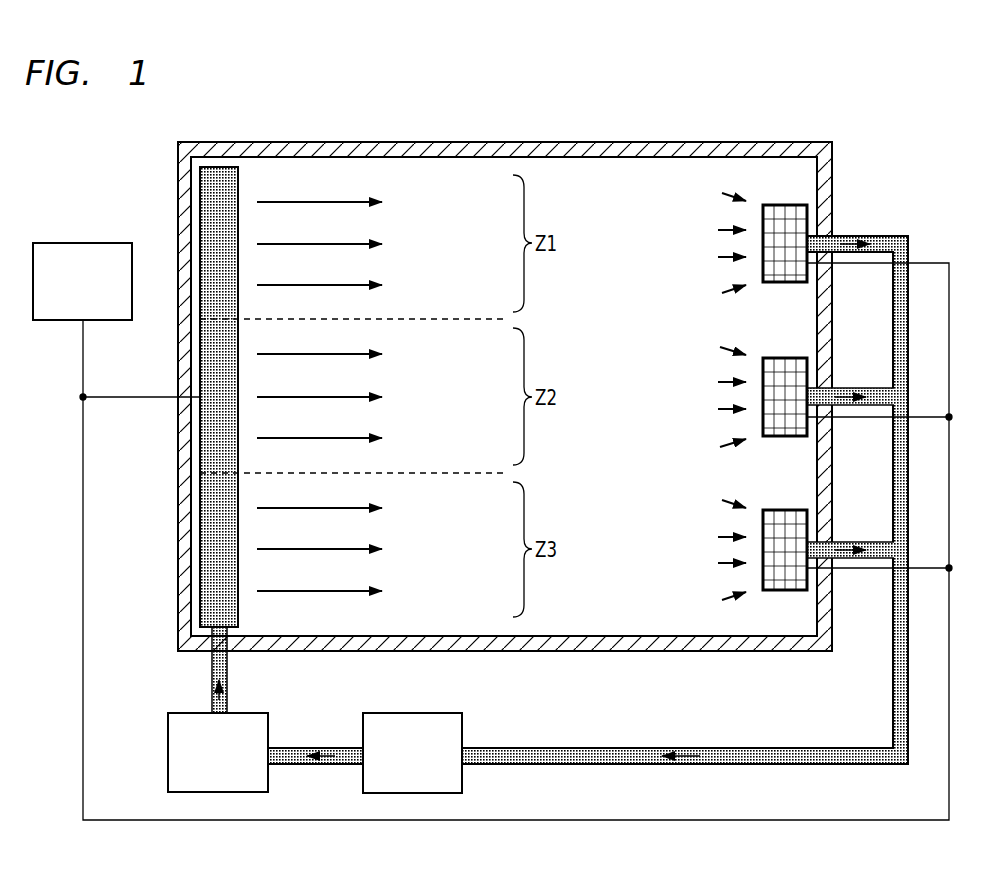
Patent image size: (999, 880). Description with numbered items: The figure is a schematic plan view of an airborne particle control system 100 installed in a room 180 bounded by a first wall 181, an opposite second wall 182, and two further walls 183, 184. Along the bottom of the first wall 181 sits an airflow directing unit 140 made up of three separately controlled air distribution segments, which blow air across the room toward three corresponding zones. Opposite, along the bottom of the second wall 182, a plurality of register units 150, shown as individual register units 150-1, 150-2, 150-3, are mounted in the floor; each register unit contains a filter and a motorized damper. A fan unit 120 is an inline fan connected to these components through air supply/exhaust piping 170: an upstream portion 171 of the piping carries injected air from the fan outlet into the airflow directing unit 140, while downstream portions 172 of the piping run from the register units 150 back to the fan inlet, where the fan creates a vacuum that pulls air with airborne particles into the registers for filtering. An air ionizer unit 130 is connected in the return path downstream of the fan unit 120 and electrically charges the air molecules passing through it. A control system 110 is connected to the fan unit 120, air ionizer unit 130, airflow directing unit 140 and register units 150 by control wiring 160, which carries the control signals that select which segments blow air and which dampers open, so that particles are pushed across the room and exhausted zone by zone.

The airborne particle control system 100 is at (102, 122).
The control system 110 is at (80, 243).
The fan unit 120 is at (168, 752).
The air ionizer unit 130 is at (462, 730).
The airflow directing unit 140 is at (205, 431).
The register units 150 is at (762, 400).
The register unit 150-1 is at (795, 205).
The register unit 150-2 is at (795, 358).
The register unit 150-3 is at (795, 510).
The control wiring 160 is at (83, 364).
The air supply/exhaust piping 170 is at (318, 662).
The upstream portion of the piping 171 is at (228, 674).
The downstream portions of the piping 172 is at (864, 236).
The room 180 is at (648, 408).
The first wall 181 is at (178, 170).
The second wall 182 is at (832, 158).
The wall 183 is at (480, 142).
The wall 184 is at (628, 651).